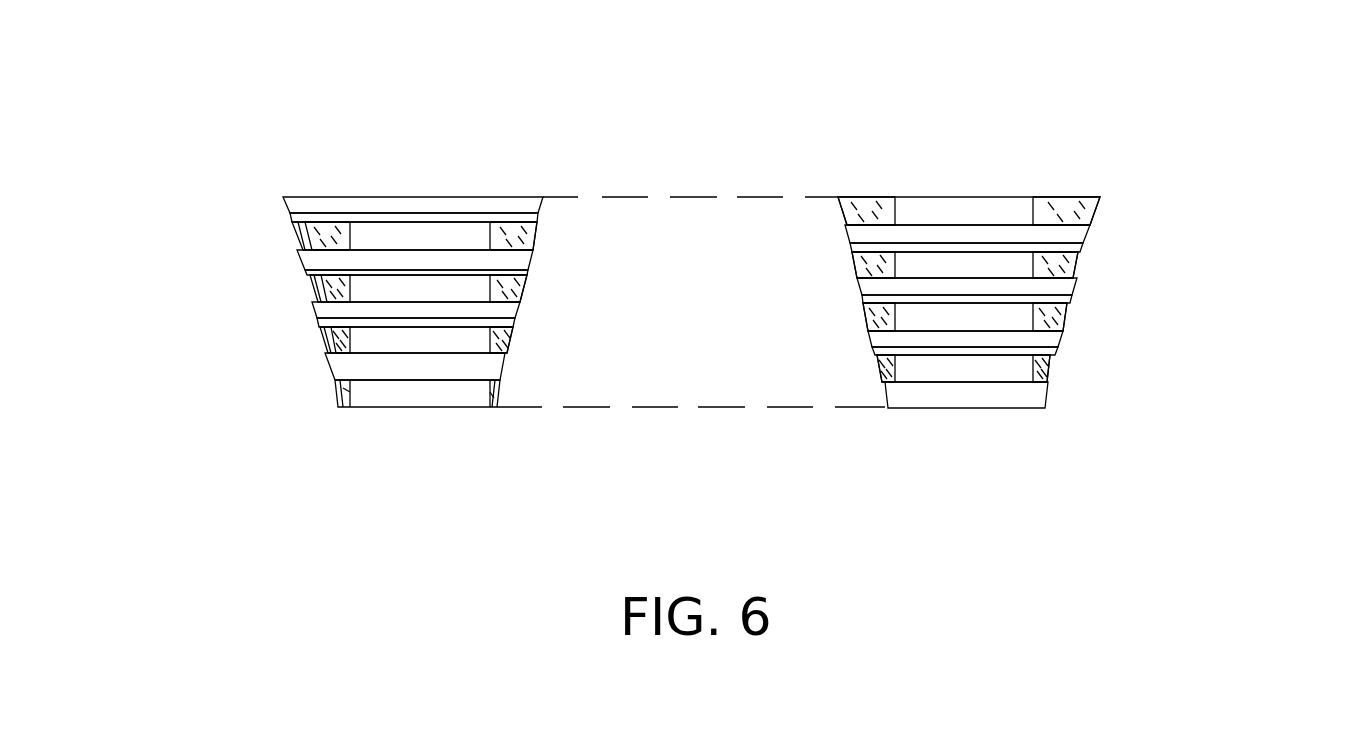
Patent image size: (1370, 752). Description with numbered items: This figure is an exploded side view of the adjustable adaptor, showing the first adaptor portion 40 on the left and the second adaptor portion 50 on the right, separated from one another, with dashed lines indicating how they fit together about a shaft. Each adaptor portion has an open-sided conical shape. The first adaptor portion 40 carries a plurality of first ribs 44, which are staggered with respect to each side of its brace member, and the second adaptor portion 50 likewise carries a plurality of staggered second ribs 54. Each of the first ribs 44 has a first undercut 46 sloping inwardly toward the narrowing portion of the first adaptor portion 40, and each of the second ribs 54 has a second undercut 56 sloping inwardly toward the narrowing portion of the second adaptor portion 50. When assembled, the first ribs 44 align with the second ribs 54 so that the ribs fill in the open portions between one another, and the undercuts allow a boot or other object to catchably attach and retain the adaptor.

The first adaptor portion 40 is at (376, 218).
The first ribs 44 is at (507, 257).
The first undercut 46 is at (313, 297).
The second adaptor portion 50 is at (1097, 221).
The second ribs 54 is at (1090, 237).
The second undercut 56 is at (1078, 273).